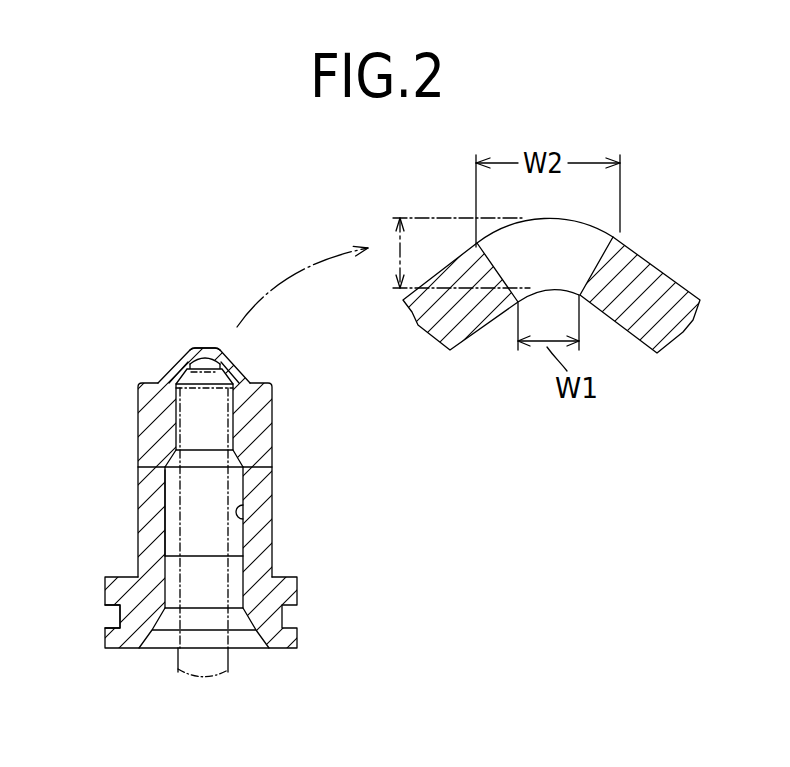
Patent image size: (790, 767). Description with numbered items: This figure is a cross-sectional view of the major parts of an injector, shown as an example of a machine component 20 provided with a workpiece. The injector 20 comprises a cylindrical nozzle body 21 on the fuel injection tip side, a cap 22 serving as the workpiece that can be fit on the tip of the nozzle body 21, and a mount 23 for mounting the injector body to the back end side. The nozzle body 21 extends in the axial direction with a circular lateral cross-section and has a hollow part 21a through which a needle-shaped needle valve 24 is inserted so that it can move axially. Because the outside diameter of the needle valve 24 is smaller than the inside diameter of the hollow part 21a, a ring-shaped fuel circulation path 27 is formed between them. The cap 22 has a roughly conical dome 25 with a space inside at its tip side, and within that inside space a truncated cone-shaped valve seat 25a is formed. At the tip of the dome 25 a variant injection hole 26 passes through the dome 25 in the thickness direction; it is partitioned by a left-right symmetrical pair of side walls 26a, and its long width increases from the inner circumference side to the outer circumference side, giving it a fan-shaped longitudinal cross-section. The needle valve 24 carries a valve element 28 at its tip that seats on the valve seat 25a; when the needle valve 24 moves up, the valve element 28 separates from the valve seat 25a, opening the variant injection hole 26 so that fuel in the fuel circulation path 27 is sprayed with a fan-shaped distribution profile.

The machine component 20 is at (388, 666).
The nozzle body 21 is at (297, 556).
The hollow part 21a is at (243, 517).
The cap 22 is at (262, 422).
The mount 23 is at (130, 617).
The needle valve 24 is at (177, 660).
The dome 25 is at (177, 361).
The valve seat 25a is at (475, 333).
The variant injection hole 26 is at (202, 347).
The side walls 26a is at (603, 254).
The fuel circulation path 27 is at (167, 500).
The valve element 28 is at (214, 380).